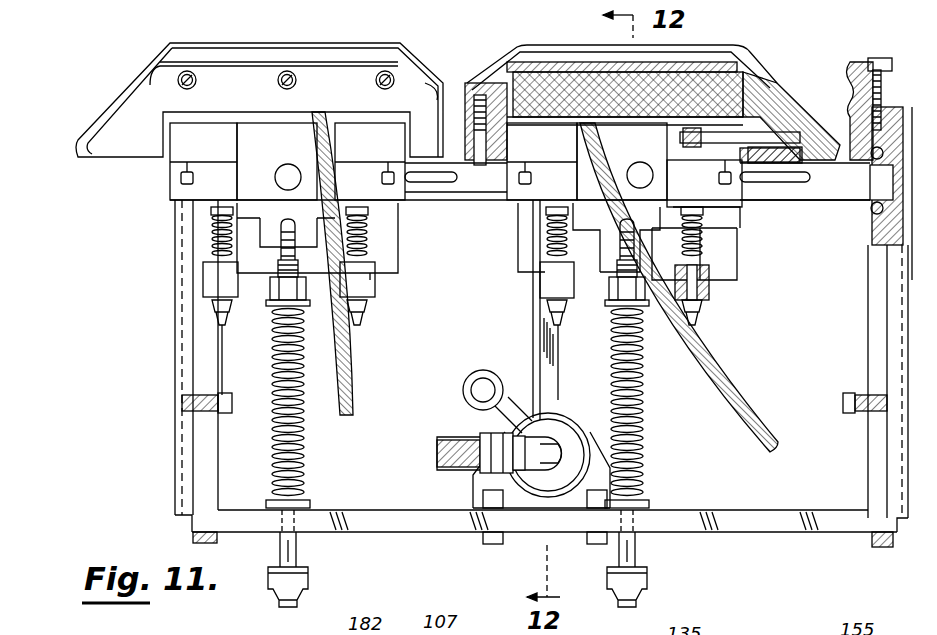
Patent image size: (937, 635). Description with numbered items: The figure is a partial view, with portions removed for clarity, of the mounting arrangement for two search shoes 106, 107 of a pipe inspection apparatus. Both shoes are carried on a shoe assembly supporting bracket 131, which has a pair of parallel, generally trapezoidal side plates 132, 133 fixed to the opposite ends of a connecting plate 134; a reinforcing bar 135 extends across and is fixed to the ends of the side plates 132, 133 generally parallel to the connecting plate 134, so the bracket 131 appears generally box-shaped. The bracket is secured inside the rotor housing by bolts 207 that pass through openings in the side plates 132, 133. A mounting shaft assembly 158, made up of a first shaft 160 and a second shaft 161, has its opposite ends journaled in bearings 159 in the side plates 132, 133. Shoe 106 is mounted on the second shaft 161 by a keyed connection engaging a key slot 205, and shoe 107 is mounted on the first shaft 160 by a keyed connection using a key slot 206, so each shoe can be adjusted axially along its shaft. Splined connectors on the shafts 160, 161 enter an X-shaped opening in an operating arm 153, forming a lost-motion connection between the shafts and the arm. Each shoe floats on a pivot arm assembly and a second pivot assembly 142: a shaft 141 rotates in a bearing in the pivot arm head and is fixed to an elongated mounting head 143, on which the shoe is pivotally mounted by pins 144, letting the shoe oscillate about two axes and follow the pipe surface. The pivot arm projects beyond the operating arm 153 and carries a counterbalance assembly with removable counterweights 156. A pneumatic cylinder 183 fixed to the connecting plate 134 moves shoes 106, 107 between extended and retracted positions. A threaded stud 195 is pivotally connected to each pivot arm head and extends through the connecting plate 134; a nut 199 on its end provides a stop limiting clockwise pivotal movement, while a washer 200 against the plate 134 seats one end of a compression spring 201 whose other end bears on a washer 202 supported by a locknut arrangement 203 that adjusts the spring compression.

The search shoe 106 is at (265, 58).
The search shoe 107 is at (707, 57).
The shoe assembly supporting bracket 131 is at (166, 433).
The side plate 132 is at (914, 442).
The side plate 133 is at (174, 351).
The connecting plate 134 is at (399, 523).
The reinforcing bar 135 is at (832, 85).
The shaft 141 is at (290, 163).
The second pivot assembly 142 is at (700, 190).
The mounting head 143 is at (586, 167).
The pins 144 is at (773, 127).
The operating arm 153 is at (540, 347).
The counterweights 156 is at (731, 253).
The mounting shaft assembly 158 is at (793, 208).
The bearings 159 is at (868, 213).
The first shaft 160 is at (831, 190).
The second shaft 161 is at (460, 201).
The pneumatic cylinder 183 is at (568, 436).
The threaded stud 195 is at (294, 544).
The nut 199 is at (310, 581).
The washer 200 is at (653, 507).
The compression spring 201 is at (308, 433).
The washer 202 is at (310, 304).
The locknut arrangement 203 is at (265, 297).
The key slot 205 is at (419, 203).
The key slot 206 is at (760, 184).
The bolts 207 is at (857, 399).